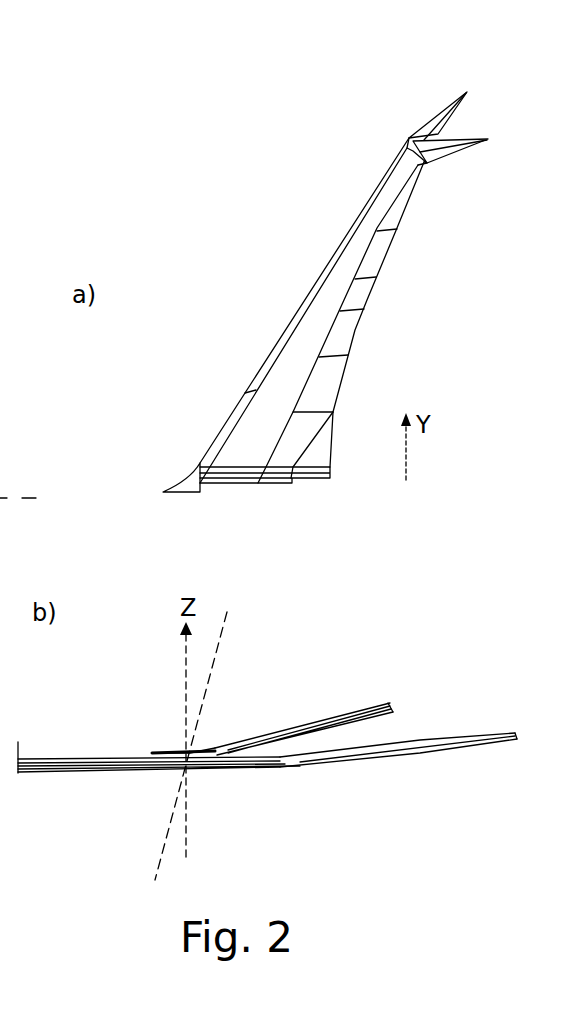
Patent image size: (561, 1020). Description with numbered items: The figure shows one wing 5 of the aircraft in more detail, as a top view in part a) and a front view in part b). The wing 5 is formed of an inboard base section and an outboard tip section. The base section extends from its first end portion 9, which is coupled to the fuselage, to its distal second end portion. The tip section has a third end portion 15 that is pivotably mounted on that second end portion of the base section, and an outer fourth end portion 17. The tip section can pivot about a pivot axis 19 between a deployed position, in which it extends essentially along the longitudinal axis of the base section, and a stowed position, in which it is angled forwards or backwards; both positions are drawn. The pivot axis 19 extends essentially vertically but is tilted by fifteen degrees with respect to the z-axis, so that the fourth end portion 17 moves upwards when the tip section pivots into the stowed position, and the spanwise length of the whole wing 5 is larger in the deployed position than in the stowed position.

The wing 5 is at (300, 232).
The first end portion 9 is at (310, 481).
The third end portion 15 is at (227, 752).
The fourth end portion 17 is at (390, 703).
The pivot axis 19 is at (220, 633).